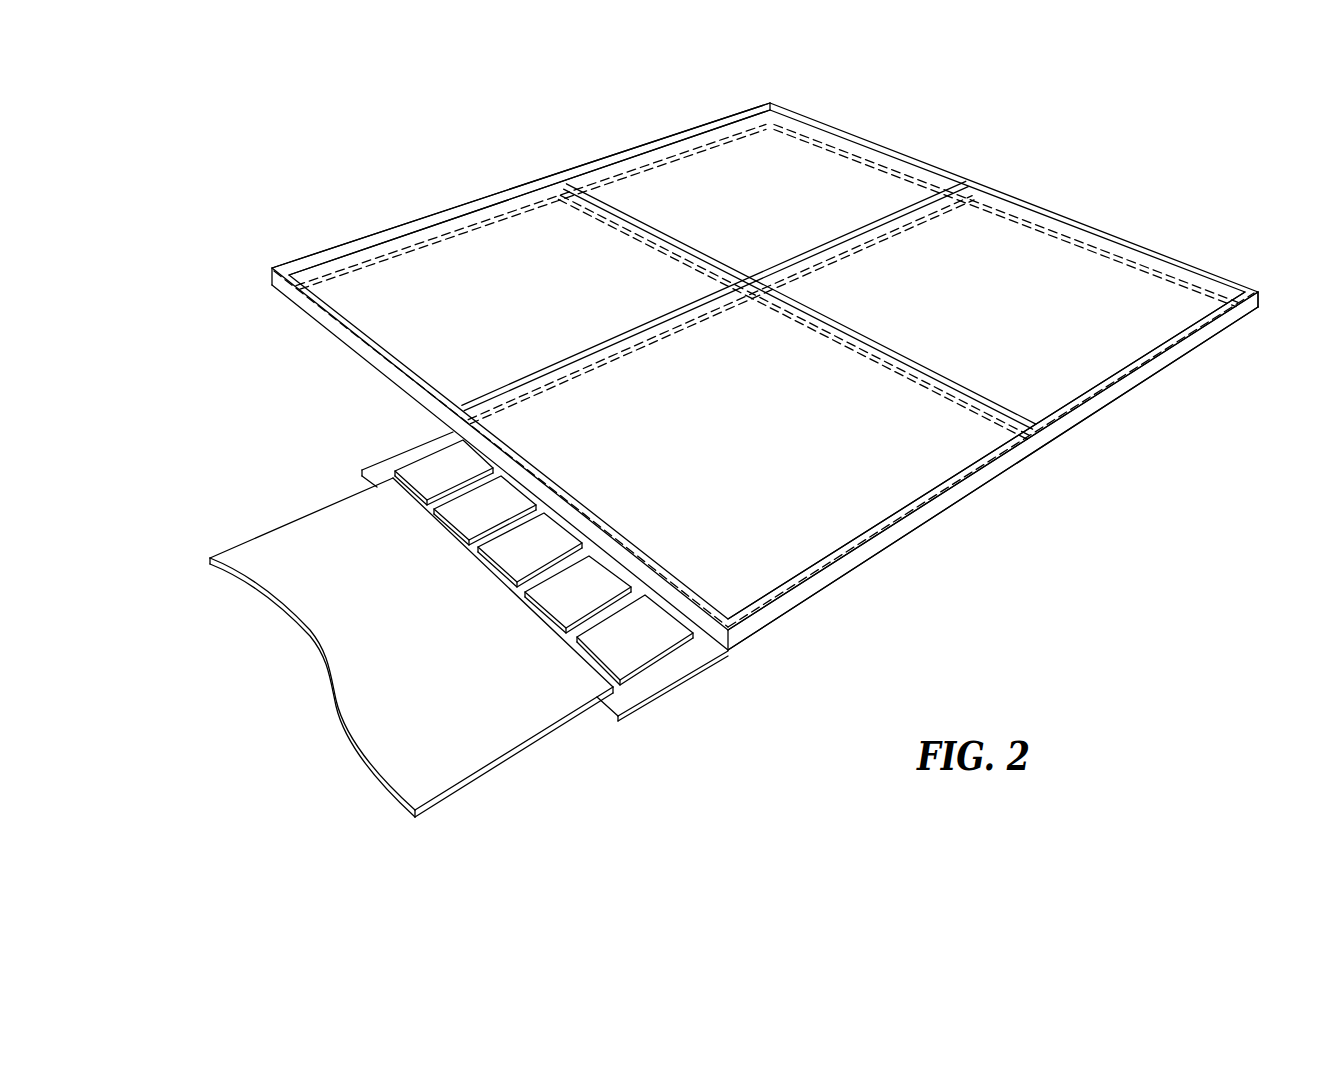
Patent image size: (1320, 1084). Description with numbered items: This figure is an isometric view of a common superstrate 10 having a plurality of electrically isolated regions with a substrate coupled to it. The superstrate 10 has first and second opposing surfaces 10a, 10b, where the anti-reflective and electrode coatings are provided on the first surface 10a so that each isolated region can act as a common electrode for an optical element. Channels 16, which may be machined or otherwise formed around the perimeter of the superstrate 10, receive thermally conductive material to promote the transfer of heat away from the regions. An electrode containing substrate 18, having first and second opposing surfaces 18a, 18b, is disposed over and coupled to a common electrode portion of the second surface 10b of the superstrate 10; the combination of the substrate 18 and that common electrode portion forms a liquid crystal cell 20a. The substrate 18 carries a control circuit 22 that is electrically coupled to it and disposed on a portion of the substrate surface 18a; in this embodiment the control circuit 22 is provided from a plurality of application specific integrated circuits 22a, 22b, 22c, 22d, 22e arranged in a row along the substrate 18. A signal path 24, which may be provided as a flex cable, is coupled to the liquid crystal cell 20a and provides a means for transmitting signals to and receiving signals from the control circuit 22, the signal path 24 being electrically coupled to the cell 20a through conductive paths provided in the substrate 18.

The common superstrate 10 is at (763, 380).
The first surface 10a is at (1117, 282).
The second surface 10b is at (1207, 373).
The channels 16 is at (322, 253).
The electrode containing substrate 18 is at (560, 614).
The first surface 18a is at (688, 649).
The second surface 18b is at (675, 688).
The liquid crystal cell 20a is at (843, 595).
The control circuit 22 is at (495, 541).
The application specific integrated circuit 22a is at (425, 480).
The application specific integrated circuit 22b is at (465, 518).
The application specific integrated circuit 22c is at (509, 557).
The application specific integrated circuit 22d is at (557, 599).
The application specific integrated circuit 22e is at (611, 643).
The signal path 24 is at (384, 706).